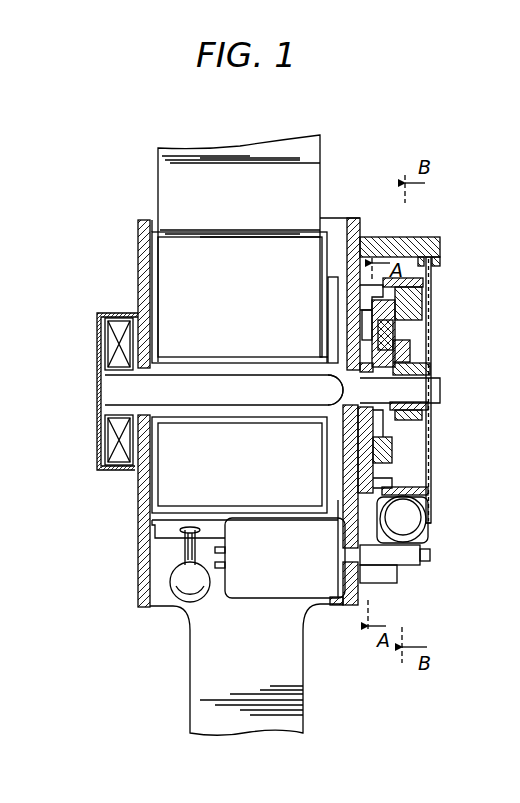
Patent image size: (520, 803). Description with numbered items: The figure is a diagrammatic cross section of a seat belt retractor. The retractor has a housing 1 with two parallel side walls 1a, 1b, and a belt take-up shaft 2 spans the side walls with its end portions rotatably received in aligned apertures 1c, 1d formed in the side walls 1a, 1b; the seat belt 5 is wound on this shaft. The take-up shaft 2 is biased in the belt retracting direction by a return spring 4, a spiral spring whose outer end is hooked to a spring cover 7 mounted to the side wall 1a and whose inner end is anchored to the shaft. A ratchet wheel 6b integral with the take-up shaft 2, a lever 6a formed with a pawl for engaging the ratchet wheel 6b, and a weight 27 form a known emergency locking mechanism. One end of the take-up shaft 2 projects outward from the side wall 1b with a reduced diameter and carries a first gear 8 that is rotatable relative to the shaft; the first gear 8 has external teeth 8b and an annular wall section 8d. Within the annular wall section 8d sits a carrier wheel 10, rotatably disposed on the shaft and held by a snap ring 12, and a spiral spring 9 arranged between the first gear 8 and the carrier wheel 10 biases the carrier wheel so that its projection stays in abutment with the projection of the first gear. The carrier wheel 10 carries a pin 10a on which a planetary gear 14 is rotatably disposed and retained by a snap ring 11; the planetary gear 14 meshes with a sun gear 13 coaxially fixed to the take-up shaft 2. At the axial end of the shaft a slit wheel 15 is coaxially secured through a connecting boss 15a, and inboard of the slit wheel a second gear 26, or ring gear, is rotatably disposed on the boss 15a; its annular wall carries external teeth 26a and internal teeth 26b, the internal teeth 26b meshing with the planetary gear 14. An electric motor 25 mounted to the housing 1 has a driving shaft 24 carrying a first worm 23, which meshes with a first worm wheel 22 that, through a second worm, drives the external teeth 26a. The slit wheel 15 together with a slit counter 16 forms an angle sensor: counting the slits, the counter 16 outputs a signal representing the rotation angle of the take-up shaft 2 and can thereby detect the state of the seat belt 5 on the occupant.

The housing 1 is at (361, 214).
The side wall 1a is at (138, 232).
The side wall 1b is at (360, 240).
The aperture 1c is at (146, 370).
The aperture 1d is at (350, 366).
The belt take-up shaft 2 is at (435, 393).
The return spring 4 is at (103, 460).
The seat belt 5 is at (322, 160).
The lever 6a is at (165, 534).
The ratchet wheel 6b is at (336, 278).
The spring cover 7 is at (113, 473).
The first gear 8 is at (372, 312).
The external teeth 8b is at (372, 292).
The annular wall section 8d is at (386, 479).
The spiral spring 9 is at (396, 330).
The carrier wheel 10 is at (347, 461).
The pin 10a is at (392, 345).
The snap ring 11 is at (421, 302).
The snap ring 12 is at (374, 456).
The sun gear 13 is at (398, 411).
The planetary gear 14 is at (410, 356).
The slit wheel 15 is at (422, 494).
The connecting boss 15a is at (428, 373).
The slit counter 16 is at (441, 240).
The first worm wheel 22 is at (408, 528).
The first worm 23 is at (410, 580).
The driving shaft 24 is at (432, 557).
The electric motor 25 is at (282, 600).
The second gear 26 is at (426, 285).
The external teeth 26a is at (430, 522).
The internal teeth 26b is at (433, 266).
The weight 27 is at (172, 584).